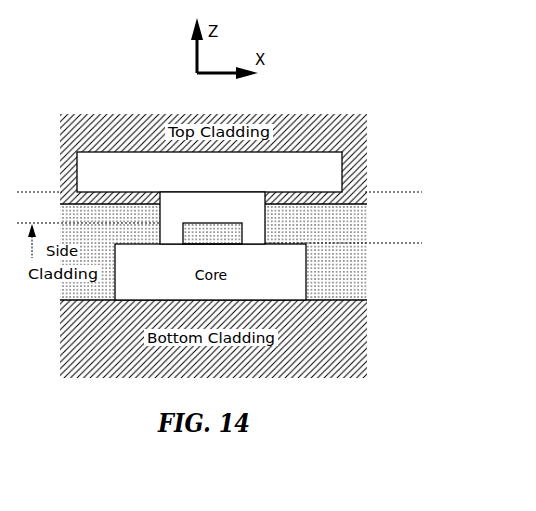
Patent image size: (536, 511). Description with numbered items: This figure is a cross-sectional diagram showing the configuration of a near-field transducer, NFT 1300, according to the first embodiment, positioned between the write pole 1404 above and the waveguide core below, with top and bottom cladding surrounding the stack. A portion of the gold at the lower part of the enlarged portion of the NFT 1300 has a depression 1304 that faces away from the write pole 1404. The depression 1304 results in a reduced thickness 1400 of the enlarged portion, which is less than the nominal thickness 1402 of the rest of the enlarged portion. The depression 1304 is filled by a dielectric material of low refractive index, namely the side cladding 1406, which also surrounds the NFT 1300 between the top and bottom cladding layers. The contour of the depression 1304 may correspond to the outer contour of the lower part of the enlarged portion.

The NFT 1300 is at (300, 222).
The depression 1304 is at (203, 228).
The reduced thickness 1400 is at (32, 180).
The nominal thickness 1402 is at (413, 180).
The write pole 1404 is at (100, 152).
The side cladding 1406 is at (345, 286).